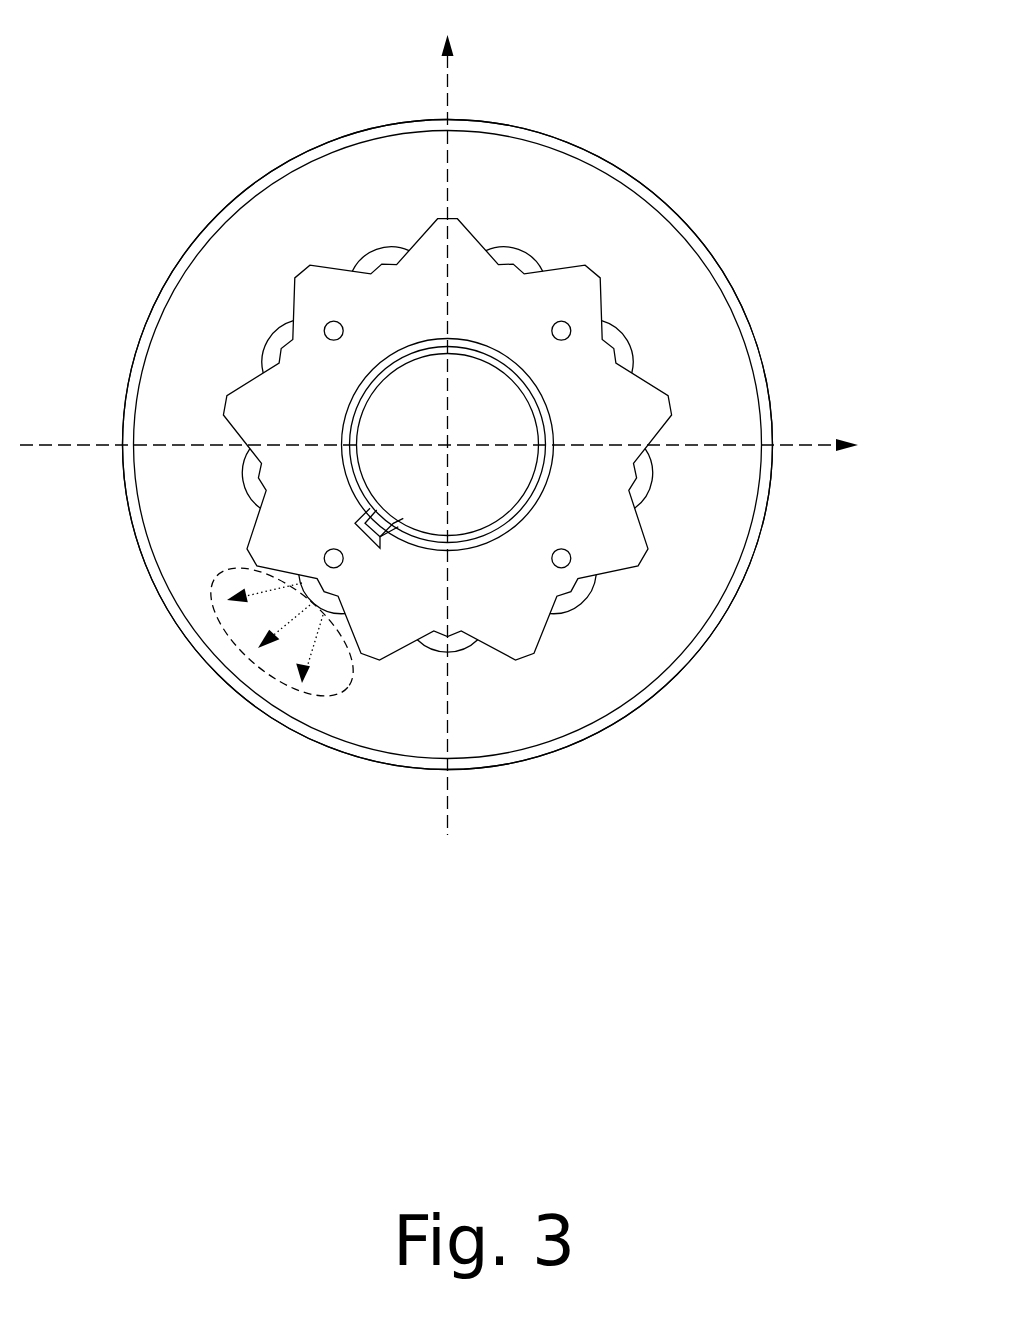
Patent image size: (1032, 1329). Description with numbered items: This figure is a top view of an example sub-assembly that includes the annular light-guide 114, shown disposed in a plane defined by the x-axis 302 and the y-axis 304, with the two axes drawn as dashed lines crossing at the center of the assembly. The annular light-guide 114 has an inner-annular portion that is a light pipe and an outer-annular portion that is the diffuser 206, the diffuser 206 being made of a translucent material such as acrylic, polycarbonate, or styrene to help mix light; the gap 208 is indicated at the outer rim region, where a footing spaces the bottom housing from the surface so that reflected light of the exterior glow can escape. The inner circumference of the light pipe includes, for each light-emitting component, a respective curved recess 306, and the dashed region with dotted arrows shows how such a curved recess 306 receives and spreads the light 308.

The annular light-guide 114 is at (742, 265).
The diffuser 206 is at (652, 687).
The gap 208 is at (718, 632).
The x-axis 302 is at (810, 445).
The y-axis 304 is at (448, 98).
The curved recess 306 is at (320, 602).
The light 308 is at (212, 585).